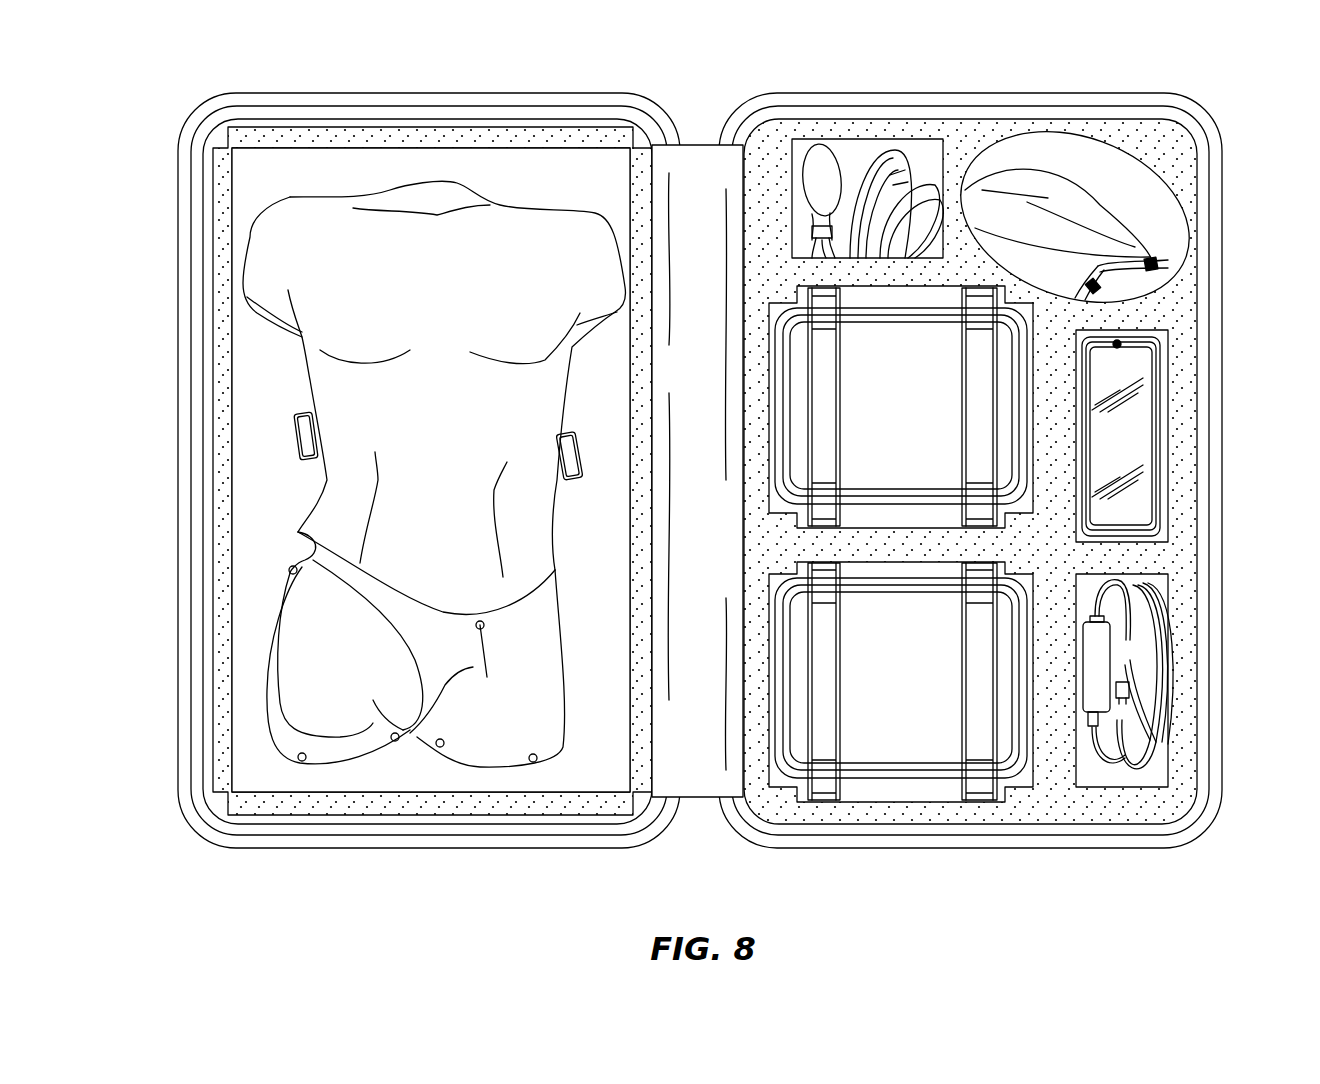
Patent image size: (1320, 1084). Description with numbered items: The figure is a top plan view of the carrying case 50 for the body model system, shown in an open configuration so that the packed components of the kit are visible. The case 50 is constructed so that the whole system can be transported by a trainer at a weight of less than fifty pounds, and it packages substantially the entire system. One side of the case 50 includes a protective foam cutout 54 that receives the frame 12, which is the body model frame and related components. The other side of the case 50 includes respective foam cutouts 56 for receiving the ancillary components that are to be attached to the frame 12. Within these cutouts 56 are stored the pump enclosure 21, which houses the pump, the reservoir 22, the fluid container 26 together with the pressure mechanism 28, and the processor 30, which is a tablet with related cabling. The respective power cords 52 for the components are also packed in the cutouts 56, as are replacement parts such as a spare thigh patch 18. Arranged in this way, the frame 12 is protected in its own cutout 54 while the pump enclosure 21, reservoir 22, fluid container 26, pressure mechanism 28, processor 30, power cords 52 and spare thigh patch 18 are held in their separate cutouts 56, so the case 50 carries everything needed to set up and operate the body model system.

The carrying case 50 is at (368, 92).
The frame 12 is at (335, 258).
The protective foam cutout 54 is at (245, 365).
The pressure mechanism 28 is at (820, 152).
The foam cutouts 56 is at (860, 145).
The fluid container 26 is at (890, 170).
The spare thigh patch 18 is at (1100, 213).
The processor 30 is at (1132, 360).
The reservoir 22 is at (940, 434).
The pump enclosure 21 is at (917, 725).
The power cords 52 is at (1100, 676).